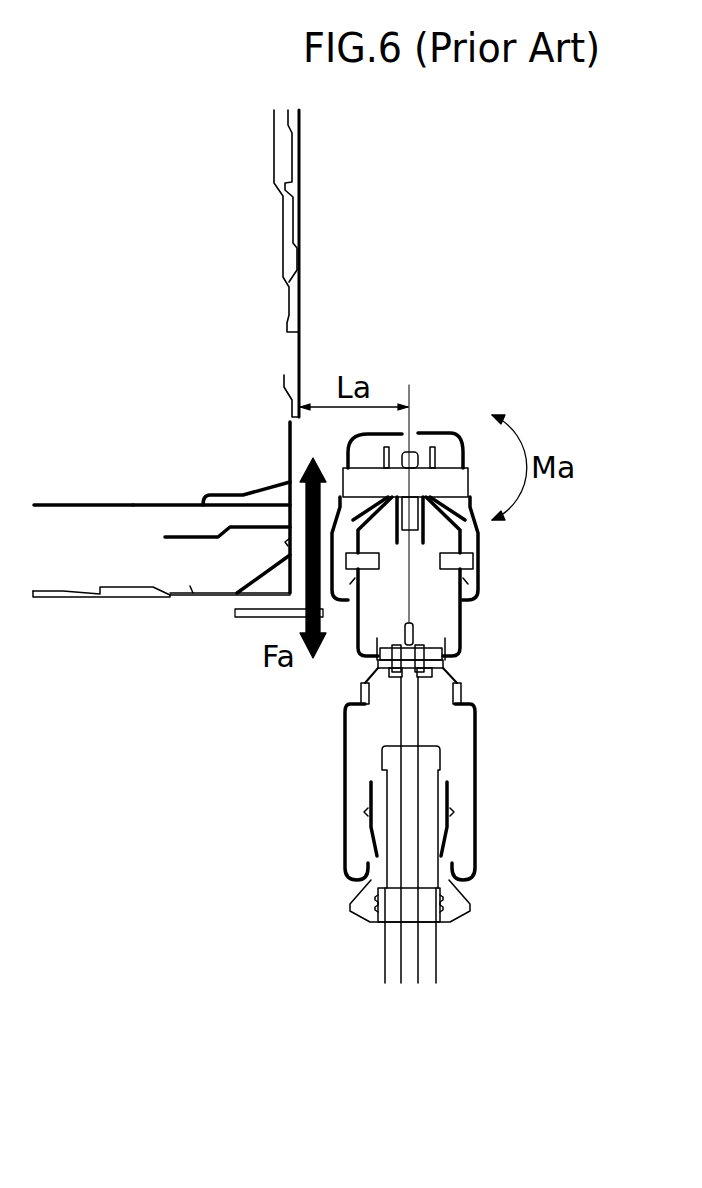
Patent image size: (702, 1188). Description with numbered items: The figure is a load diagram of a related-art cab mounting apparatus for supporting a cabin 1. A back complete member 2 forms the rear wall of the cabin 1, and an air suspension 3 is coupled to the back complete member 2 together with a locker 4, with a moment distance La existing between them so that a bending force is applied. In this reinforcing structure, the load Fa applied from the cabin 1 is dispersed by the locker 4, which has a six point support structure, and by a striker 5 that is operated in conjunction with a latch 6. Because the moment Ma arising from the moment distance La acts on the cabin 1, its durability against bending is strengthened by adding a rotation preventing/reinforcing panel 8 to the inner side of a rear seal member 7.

The cabin 1 is at (172, 352).
The back complete member 2 is at (303, 340).
The air suspension 3 is at (477, 790).
The locker 4 is at (423, 474).
The striker 5 is at (453, 437).
The latch 6 is at (433, 450).
The rear seal member 7 is at (108, 532).
The rotation preventing/reinforcing panel 8 is at (253, 473).